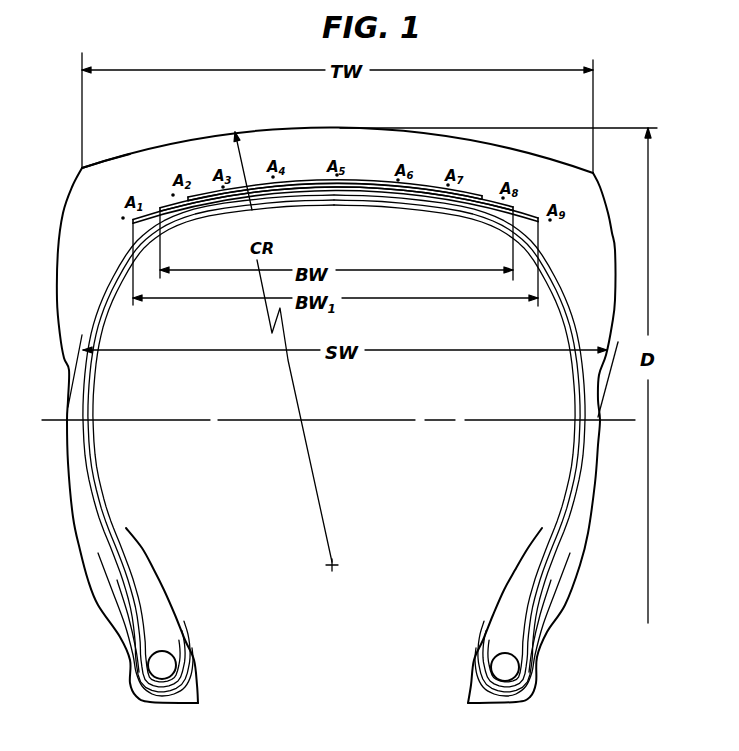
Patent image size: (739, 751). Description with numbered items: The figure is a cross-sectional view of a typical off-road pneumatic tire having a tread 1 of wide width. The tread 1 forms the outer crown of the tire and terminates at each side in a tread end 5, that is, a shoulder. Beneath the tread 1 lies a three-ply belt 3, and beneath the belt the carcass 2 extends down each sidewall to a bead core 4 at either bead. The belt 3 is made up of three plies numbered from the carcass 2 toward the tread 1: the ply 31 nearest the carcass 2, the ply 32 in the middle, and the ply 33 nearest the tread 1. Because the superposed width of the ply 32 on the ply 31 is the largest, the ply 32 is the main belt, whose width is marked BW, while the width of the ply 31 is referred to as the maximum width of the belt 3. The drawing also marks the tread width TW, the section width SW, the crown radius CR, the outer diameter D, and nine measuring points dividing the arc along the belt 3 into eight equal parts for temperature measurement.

The tread 1 is at (373, 140).
The carcass 2 is at (107, 503).
The three-ply belt 3 is at (335, 182).
The ply 3₁ 31 is at (452, 210).
The ply 3₂ 32 is at (414, 203).
The ply 3₃ 33 is at (380, 198).
The bead core 4 is at (161, 660).
The tread end (shoulder) 5 is at (82, 168).